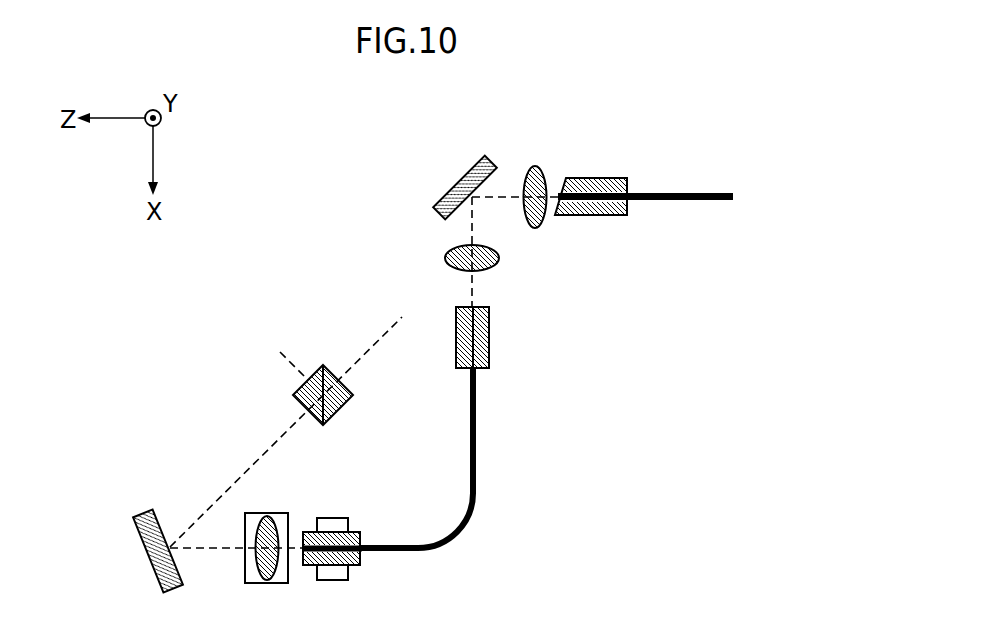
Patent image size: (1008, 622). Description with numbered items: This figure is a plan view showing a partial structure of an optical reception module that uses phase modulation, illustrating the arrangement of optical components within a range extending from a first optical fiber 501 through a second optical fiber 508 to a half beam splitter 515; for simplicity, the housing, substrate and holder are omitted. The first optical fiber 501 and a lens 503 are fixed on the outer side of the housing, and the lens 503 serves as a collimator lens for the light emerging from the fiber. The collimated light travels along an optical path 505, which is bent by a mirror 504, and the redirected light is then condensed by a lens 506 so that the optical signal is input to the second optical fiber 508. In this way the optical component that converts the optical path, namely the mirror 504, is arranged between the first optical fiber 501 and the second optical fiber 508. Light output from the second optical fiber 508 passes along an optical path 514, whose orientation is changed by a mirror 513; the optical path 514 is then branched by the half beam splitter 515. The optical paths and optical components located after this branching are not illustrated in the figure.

The first optical fiber 501 is at (680, 200).
The lens 503 is at (536, 166).
The mirror 504 is at (462, 180).
The optical path 505 is at (500, 199).
The lens 506 is at (445, 257).
The second optical fiber 508 is at (476, 440).
The mirror 513 is at (143, 512).
The optical path 514 is at (233, 477).
The half beam splitter 515 is at (300, 388).